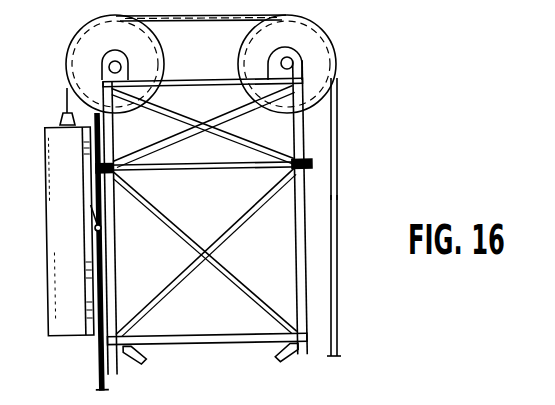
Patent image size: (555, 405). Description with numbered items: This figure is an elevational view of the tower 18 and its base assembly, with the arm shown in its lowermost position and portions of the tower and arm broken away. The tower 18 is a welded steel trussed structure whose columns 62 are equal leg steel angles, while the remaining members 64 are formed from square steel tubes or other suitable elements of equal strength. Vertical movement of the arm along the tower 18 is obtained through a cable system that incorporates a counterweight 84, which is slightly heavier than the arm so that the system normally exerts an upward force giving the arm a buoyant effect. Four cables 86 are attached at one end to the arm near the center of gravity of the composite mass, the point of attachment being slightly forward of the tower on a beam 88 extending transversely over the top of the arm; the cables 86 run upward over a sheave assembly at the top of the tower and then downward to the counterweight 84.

The tower 18 is at (325, 308).
The columns 62 is at (294, 234).
The members 64 is at (226, 231).
The counterweight 84 is at (48, 181).
The cables 86 is at (357, 113).
The beam 88 is at (0, 329).